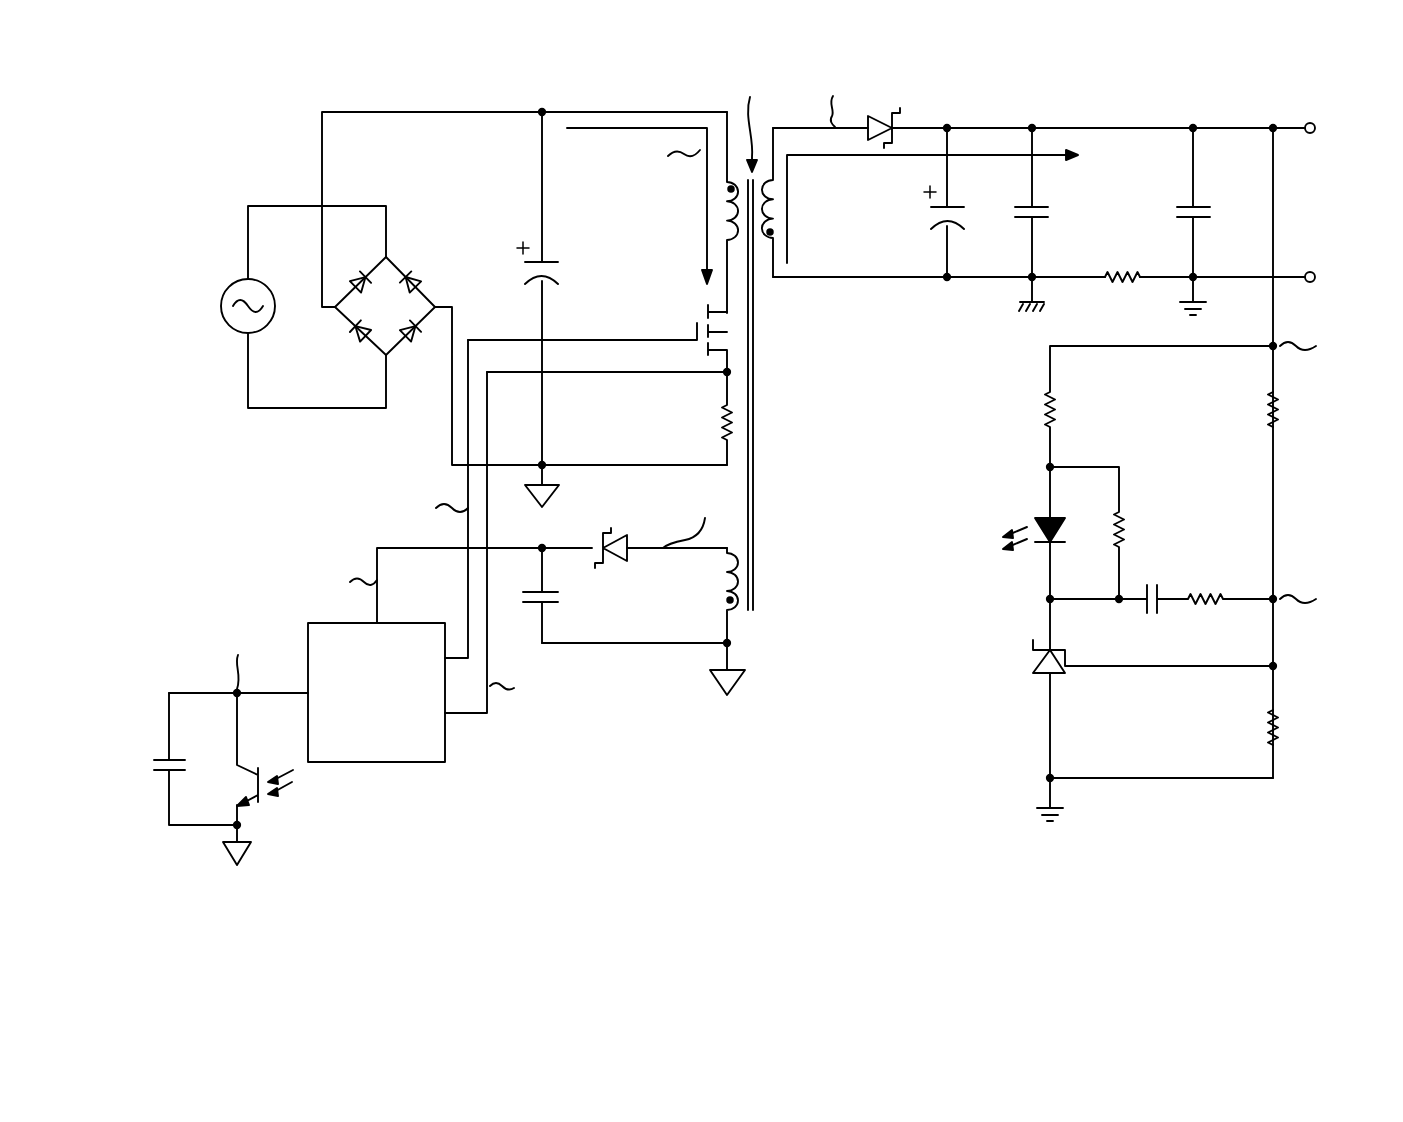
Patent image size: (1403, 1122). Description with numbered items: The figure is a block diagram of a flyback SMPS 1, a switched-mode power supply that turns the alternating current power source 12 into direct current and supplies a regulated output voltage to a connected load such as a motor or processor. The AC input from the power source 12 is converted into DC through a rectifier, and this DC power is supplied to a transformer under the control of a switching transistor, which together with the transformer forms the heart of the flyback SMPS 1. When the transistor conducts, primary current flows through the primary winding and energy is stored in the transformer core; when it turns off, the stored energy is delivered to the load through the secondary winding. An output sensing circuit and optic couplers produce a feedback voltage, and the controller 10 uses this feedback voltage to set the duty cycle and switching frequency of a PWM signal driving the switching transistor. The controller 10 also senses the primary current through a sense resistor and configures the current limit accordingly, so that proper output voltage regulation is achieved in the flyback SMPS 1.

The flyback SMPS 1 is at (222, 144).
The power source 12 is at (262, 284).
The controller 10 is at (447, 748).